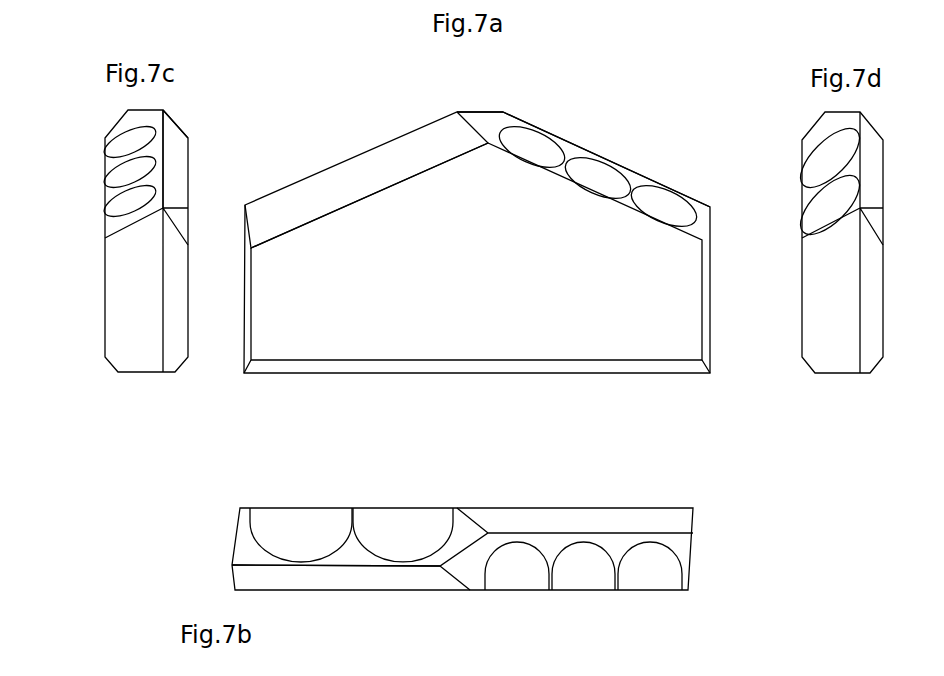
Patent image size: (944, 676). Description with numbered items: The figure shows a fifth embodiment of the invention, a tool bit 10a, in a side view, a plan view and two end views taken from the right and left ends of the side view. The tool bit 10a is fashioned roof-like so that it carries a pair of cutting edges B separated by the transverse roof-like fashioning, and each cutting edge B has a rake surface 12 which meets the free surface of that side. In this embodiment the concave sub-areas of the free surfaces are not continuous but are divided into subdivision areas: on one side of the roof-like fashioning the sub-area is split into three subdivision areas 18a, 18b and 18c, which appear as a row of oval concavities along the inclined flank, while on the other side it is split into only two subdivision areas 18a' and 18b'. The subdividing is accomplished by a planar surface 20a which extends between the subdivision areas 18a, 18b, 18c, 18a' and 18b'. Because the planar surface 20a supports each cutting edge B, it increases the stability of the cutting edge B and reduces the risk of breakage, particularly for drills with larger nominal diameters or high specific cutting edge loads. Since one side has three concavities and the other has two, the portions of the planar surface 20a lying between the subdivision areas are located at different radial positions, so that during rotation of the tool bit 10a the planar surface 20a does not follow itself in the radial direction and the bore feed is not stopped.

In FIG. 7A, the tool bit 10a is at (477, 242).
In FIG. 7B, the tool bit 10a is at (705, 560).
In FIG. 7C, the tool bit 10a is at (148, 387).
In FIG. 7D, the tool bit 10a is at (843, 385).
In FIG. 7A, the rake surface 12 is at (347, 180).
In FIG. 7A, the cutting edge B is at (547, 125).
In FIG. 7C, the cutting edge B is at (165, 128).
In FIG. 7A, the planar surface 20a is at (570, 150).
In FIG. 7B, the planar surface 20a is at (342, 558).
In FIG. 7C, the planar surface 20a is at (155, 178).
In FIG. 7A, the subdivision area 18a is at (673, 180).
In FIG. 7B, the subdivision area 18a is at (650, 602).
In FIG. 7C, the subdivision area 18a is at (93, 215).
In FIG. 7A, the subdivision area 18b is at (614, 154).
In FIG. 7B, the subdivision area 18b is at (583, 602).
In FIG. 7C, the subdivision area 18b is at (93, 181).
In FIG. 7A, the subdivision area 18c is at (548, 155).
In FIG. 7B, the subdivision area 18c is at (517, 572).
In FIG. 7C, the subdivision area 18c is at (122, 148).
In FIG. 7B, the subdivision area 18a' is at (301, 501).
In FIG. 7D, the subdivision area 18a' is at (803, 205).
In FIG. 7B, the subdivision area 18b' is at (403, 501).
In FIG. 7D, the subdivision area 18b' is at (803, 158).